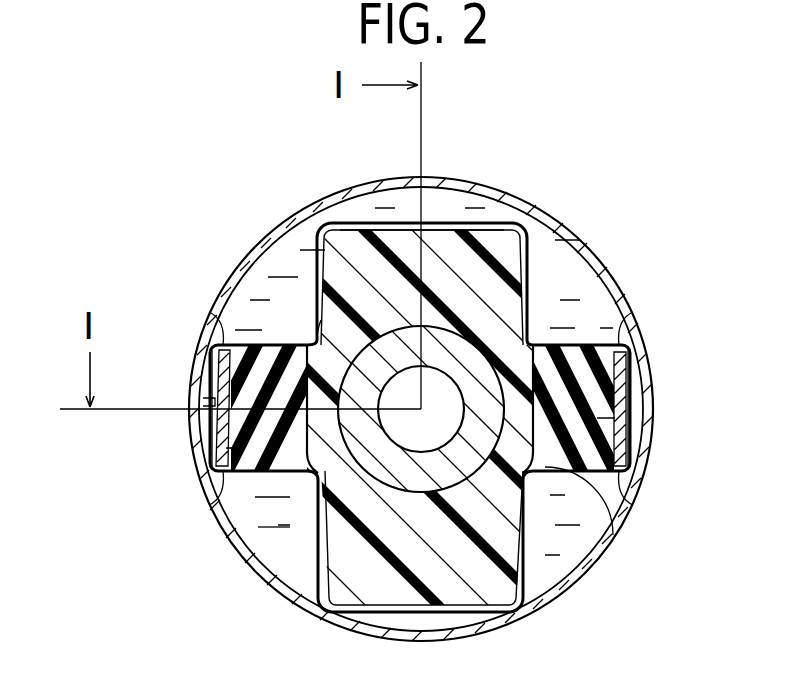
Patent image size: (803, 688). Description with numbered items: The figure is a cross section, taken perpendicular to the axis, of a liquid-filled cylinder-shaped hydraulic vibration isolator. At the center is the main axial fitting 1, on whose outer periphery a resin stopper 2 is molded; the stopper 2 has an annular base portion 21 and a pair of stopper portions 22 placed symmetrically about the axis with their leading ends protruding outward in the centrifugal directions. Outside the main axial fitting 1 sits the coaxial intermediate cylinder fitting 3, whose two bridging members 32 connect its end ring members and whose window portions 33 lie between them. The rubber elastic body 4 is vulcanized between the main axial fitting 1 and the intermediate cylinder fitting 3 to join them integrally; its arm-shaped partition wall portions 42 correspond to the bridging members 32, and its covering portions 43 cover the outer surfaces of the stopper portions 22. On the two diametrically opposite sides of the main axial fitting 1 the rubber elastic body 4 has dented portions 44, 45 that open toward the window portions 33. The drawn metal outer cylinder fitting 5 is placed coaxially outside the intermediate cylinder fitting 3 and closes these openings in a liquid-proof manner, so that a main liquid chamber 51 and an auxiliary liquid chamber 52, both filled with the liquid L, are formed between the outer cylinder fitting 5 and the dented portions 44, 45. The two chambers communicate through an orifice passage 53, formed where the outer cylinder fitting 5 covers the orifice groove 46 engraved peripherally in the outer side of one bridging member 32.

The main axial fitting 1 is at (477, 387).
The stopper 2 is at (547, 340).
The intermediate cylinder fitting 3 is at (644, 454).
The rubber elastic body 4 is at (302, 335).
The outer cylinder fitting 5 is at (508, 183).
The annular base portion 21 is at (612, 537).
The stopper portion 22 is at (500, 248).
The bridging member 32 is at (213, 380).
The window portion 33 is at (210, 313).
The arm-shaped partition wall portion 42 is at (615, 418).
The covering portion 43 is at (442, 219).
The dented portion 44 is at (290, 327).
The dented portion 45 is at (262, 534).
The orifice groove 46 is at (205, 410).
The main liquid chamber 51 is at (330, 213).
The auxiliary liquid chamber 52 is at (295, 533).
The orifice passage 53 is at (203, 423).
The liquid L is at (290, 268).